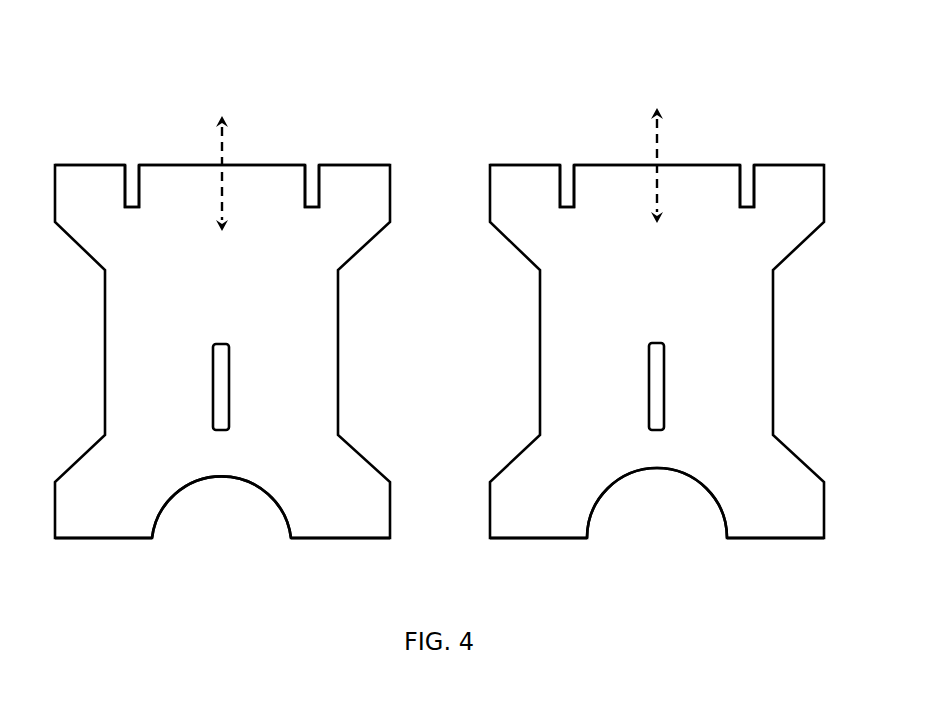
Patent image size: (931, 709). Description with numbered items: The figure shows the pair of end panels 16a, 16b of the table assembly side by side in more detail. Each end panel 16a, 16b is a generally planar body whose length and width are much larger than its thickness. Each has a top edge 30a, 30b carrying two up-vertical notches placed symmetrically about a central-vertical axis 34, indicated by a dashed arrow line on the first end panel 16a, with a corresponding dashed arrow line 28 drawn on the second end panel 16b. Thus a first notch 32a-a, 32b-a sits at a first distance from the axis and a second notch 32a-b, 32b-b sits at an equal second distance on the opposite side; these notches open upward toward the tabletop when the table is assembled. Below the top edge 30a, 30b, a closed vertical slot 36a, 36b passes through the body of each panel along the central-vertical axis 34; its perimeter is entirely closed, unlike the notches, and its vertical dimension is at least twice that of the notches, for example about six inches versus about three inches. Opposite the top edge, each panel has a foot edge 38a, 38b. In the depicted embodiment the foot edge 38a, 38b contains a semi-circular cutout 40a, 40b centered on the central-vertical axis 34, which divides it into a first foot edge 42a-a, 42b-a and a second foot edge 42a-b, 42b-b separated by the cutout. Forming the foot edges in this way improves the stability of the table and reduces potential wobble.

The end panel 16a is at (367, 107).
The end panel 16b is at (780, 107).
The vertical adjustment direction 28 is at (658, 140).
The top edge 30a is at (73, 152).
The top edge 30b is at (523, 153).
The first notch 32a-a is at (140, 217).
The second notch 32a-b is at (297, 215).
The first notch 32b-a is at (577, 215).
The second notch 32b-b is at (732, 215).
The central-vertical axis 34 is at (223, 142).
The closed vertical slot 36a is at (238, 380).
The closed vertical slot 36b is at (675, 378).
The foot edge 38a is at (85, 548).
The foot edge 38b is at (513, 550).
The semi-circular cutout 40a is at (188, 481).
The semi-circular cutout 40b is at (692, 482).
The first foot edge 42a-a is at (120, 539).
The second foot edge 42a-b is at (345, 539).
The first foot edge 42b-a is at (550, 539).
The second foot edge 42b-b is at (767, 539).